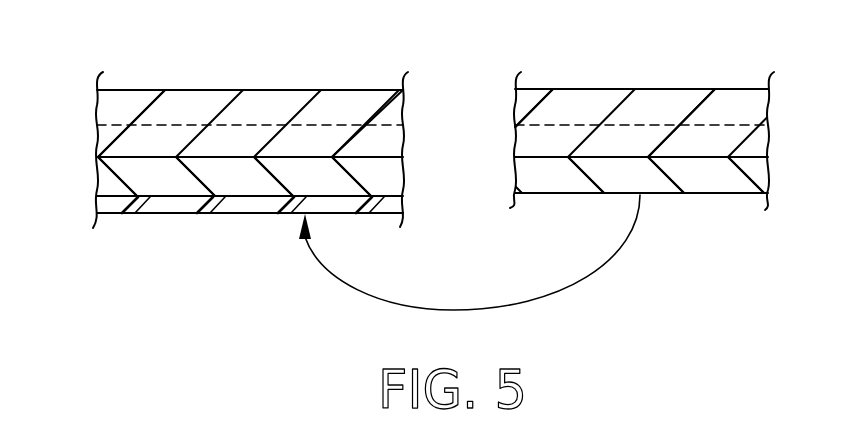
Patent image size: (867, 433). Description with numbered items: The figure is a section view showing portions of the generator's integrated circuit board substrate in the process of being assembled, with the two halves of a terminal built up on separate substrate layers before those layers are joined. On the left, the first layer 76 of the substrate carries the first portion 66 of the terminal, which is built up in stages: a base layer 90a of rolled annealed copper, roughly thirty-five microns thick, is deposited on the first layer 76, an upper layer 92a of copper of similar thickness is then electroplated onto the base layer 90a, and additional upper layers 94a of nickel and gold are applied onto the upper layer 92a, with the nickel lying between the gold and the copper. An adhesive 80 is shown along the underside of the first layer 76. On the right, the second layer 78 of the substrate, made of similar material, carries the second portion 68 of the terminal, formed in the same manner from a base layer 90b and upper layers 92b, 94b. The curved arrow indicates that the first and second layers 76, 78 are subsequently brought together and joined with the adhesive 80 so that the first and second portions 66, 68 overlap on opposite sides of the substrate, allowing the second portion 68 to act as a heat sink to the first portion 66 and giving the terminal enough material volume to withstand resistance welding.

The first portion 66 is at (231, 159).
The second portion 68 is at (548, 131).
The first layer 76 is at (182, 185).
The second layer 78 is at (698, 178).
The adhesive 80 is at (257, 203).
The base layer 90a is at (128, 138).
The base layer 90b is at (760, 137).
The upper layer 92a is at (167, 103).
The upper layer 92b is at (645, 103).
The additional upper layers 94a is at (343, 100).
The additional upper layers 94b is at (580, 96).